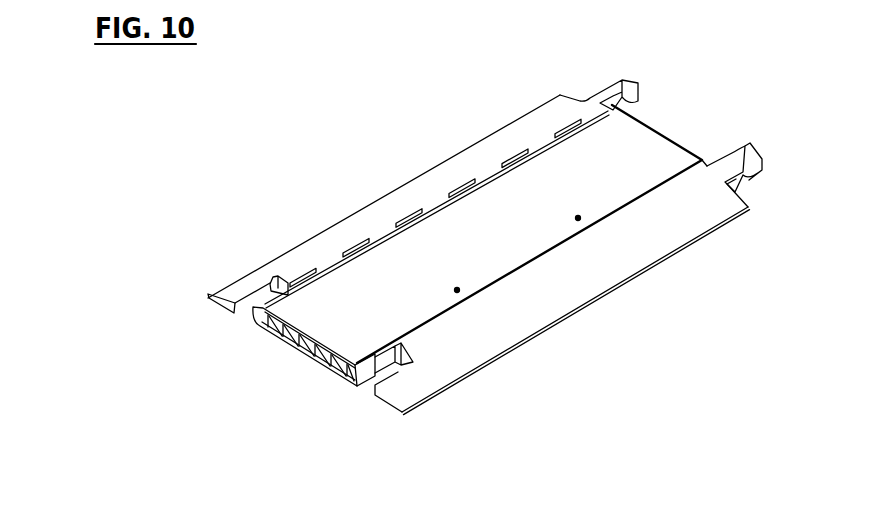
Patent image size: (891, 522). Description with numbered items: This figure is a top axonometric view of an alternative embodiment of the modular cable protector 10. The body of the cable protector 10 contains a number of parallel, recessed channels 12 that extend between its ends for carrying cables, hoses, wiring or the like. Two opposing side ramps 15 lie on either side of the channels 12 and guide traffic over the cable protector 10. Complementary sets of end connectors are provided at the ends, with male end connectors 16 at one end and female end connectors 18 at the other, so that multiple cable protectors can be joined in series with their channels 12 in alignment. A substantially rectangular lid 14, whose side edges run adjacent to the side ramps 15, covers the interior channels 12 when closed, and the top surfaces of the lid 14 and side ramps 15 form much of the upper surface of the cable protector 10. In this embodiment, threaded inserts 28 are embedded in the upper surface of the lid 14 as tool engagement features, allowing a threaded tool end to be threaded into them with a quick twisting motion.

The cable protector 10 is at (207, 214).
The channels 12 is at (307, 358).
The lid 14 is at (410, 250).
The side ramps 15 is at (680, 212).
The male end connectors 16 is at (747, 148).
The female end connectors 18 is at (250, 316).
The threaded inserts 28 is at (460, 292).